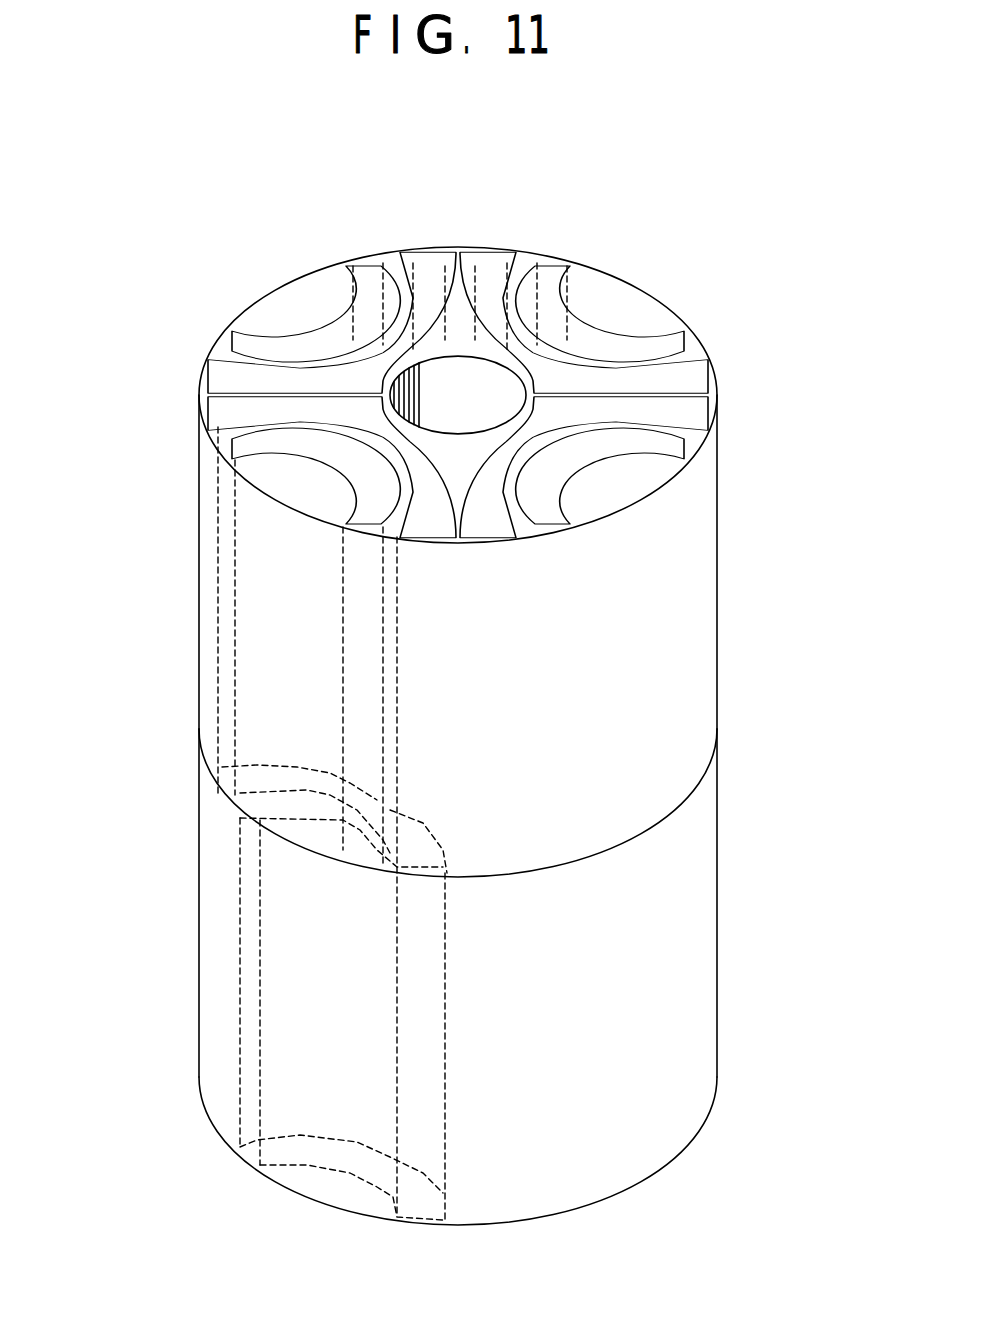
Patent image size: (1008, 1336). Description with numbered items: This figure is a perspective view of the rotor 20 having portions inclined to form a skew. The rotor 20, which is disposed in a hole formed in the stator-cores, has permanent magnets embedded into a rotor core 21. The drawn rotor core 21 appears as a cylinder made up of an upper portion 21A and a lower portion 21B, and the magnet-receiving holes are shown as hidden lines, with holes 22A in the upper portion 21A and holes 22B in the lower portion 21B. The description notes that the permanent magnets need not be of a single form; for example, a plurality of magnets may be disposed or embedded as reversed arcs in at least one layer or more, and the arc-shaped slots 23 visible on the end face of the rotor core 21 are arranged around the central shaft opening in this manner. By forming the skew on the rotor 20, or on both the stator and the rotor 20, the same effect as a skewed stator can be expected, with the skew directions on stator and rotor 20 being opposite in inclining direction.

The rotor 20 is at (583, 266).
The rotor core 21 is at (525, 810).
The first rotor core section 21A is at (623, 572).
The second rotor core section 21B is at (650, 920).
The magnet insertion holes of first section 22A is at (292, 592).
The magnet insertion holes of second section 22B is at (308, 968).
The magnet slots 23 is at (263, 342).